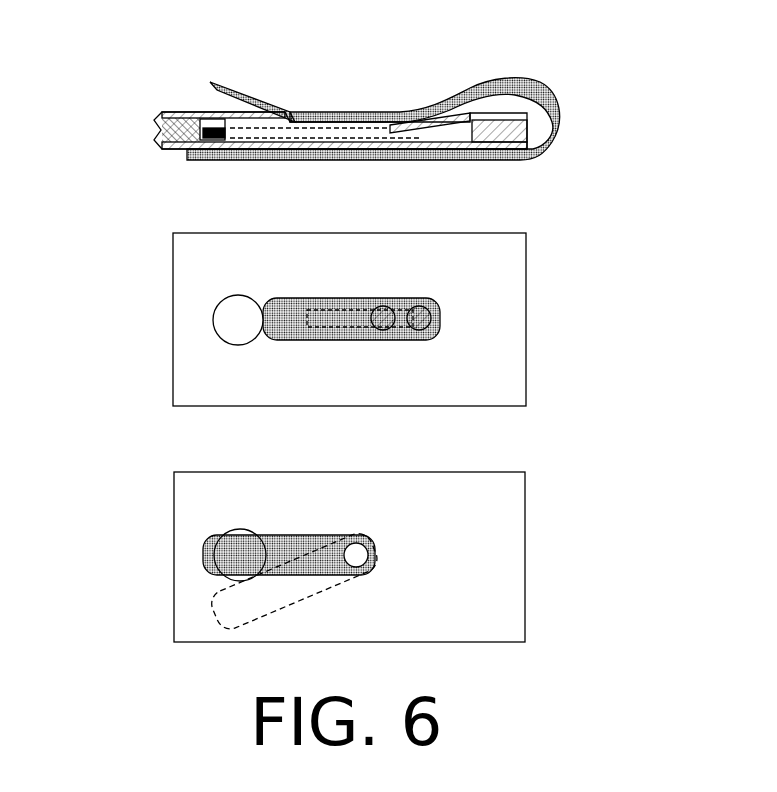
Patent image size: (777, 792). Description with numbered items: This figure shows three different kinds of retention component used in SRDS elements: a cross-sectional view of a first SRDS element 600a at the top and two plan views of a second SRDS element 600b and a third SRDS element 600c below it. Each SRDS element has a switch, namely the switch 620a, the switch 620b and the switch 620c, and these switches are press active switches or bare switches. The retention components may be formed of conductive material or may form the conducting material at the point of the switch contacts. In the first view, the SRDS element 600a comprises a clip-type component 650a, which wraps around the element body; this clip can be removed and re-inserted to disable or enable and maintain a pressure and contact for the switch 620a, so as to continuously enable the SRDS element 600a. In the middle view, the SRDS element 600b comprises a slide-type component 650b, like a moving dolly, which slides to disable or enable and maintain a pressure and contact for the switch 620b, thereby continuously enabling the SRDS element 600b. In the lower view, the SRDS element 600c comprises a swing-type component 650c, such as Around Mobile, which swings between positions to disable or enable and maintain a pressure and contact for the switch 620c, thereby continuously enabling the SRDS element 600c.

The SRDS element 600a is at (138, 120).
The switch 620a is at (367, 115).
The clip-type component 650a is at (562, 120).
The SRDS element 600b is at (147, 283).
The switch 620b is at (240, 335).
The slide-type component 650b is at (350, 308).
The SRDS element 600c is at (152, 492).
The switch 620c is at (240, 580).
The swing-type component 650c is at (300, 567).